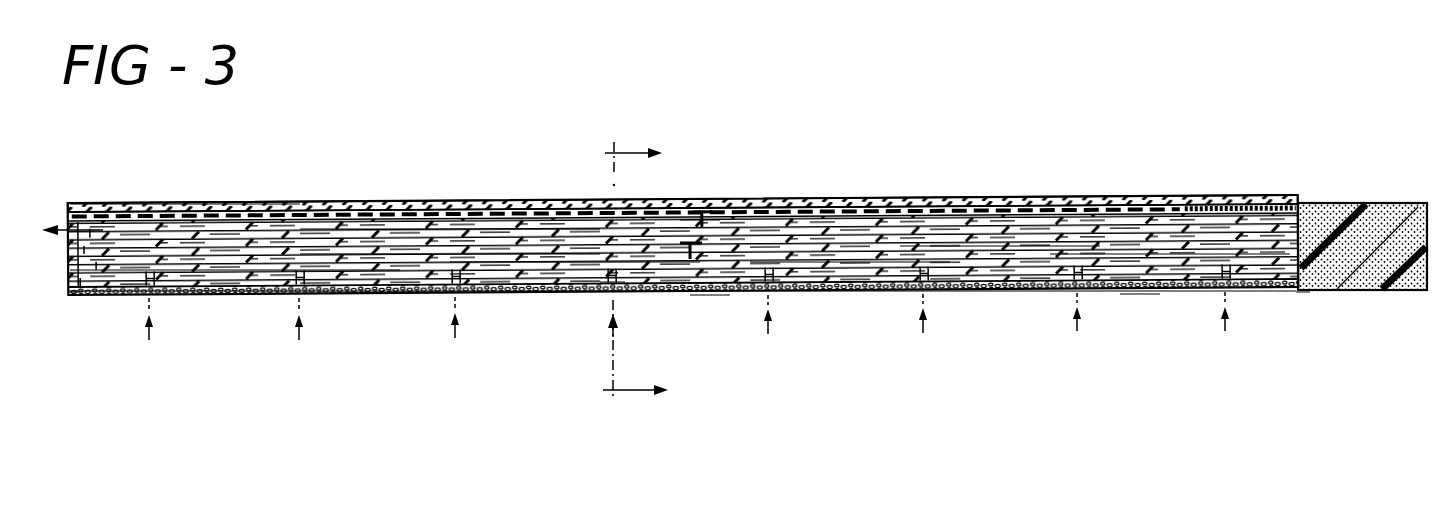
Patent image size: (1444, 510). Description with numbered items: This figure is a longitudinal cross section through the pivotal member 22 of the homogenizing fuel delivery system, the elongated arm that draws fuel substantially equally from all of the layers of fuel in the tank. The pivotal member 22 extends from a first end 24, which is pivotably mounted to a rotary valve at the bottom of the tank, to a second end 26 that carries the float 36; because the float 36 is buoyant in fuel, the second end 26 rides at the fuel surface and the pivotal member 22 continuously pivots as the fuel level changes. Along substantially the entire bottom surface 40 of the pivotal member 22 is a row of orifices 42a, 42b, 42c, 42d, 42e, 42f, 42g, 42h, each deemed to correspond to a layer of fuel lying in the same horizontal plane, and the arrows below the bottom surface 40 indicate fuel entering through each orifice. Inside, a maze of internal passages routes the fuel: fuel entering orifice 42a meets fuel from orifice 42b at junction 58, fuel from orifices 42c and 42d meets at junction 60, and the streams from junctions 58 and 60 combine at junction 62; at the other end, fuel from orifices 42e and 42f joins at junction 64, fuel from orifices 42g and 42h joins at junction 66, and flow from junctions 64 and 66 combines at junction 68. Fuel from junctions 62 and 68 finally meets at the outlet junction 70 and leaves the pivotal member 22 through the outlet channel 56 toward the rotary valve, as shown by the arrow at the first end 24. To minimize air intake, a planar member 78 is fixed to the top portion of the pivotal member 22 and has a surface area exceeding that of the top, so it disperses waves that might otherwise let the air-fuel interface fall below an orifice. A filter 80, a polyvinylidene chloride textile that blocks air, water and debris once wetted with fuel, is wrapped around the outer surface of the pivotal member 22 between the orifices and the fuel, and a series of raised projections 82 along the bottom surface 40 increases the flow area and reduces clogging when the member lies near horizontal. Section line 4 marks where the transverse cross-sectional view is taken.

The pivotal member 22 is at (928, 172).
The first end 24 is at (66, 293).
The second end 26 is at (1310, 290).
The float 36 is at (1340, 203).
The bottom surface 40 is at (257, 290).
The orifice 42a is at (157, 282).
The orifice 42b is at (303, 282).
The orifice 42c is at (452, 282).
The orifice 42d is at (593, 282).
The orifice 42e is at (780, 282).
The orifice 42f is at (935, 282).
The orifice 42g is at (1090, 282).
The orifice 42h is at (1240, 282).
The outlet channel 56 is at (412, 227).
The junction 58 is at (217, 268).
The junction 60 is at (522, 265).
The junction 62 is at (376, 250).
The junction 64 is at (830, 262).
The junction 66 is at (1138, 260).
The junction 68 is at (990, 246).
The outlet junction 70 is at (695, 222).
The planar member 78 is at (155, 205).
The filter 80 is at (708, 292).
The raised projections 82 is at (1140, 288).
The section line 4- 4 is at (635, 271).